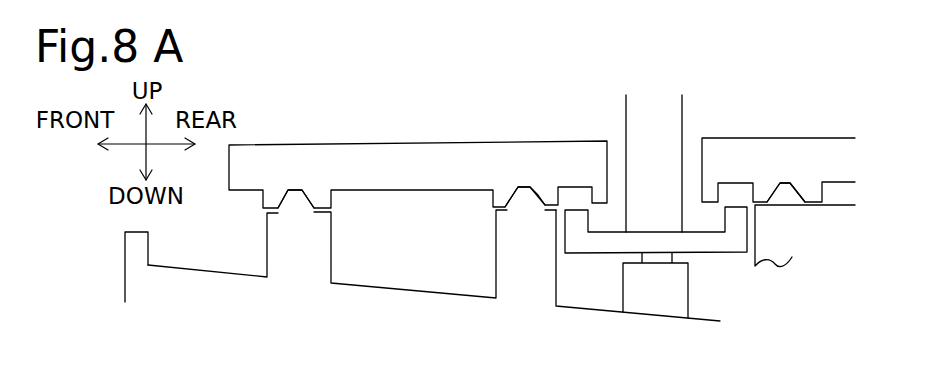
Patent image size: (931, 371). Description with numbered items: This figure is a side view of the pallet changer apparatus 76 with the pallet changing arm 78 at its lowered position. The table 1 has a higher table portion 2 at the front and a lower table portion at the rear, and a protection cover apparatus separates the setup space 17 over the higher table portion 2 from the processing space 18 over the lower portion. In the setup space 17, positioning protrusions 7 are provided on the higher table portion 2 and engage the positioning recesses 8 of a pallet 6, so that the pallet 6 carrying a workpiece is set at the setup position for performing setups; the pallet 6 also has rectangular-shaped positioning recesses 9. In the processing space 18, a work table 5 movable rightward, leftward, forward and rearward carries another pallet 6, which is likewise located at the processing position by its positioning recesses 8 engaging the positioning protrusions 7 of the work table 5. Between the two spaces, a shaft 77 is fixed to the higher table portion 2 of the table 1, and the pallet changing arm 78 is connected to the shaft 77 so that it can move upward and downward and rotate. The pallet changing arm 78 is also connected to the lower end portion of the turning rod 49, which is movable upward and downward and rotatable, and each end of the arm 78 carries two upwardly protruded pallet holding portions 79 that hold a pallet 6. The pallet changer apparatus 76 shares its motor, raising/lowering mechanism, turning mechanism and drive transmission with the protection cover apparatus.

The table 1 is at (123, 294).
The higher table portion 2 is at (203, 270).
The work table 5 is at (771, 268).
The pallet 6 is at (429, 143).
The positioning protrusions 7 is at (312, 196).
The positioning recesses 8 is at (298, 190).
The positioning recesses 9 is at (592, 198).
The setup space 17 is at (362, 52).
The processing space 18 is at (833, 47).
The turning rod 49 is at (625, 112).
The pallet changer apparatus 76 is at (709, 128).
The shaft 77 is at (654, 260).
The pallet changing arm 78 is at (597, 257).
The pallet holding portions 79 is at (563, 218).